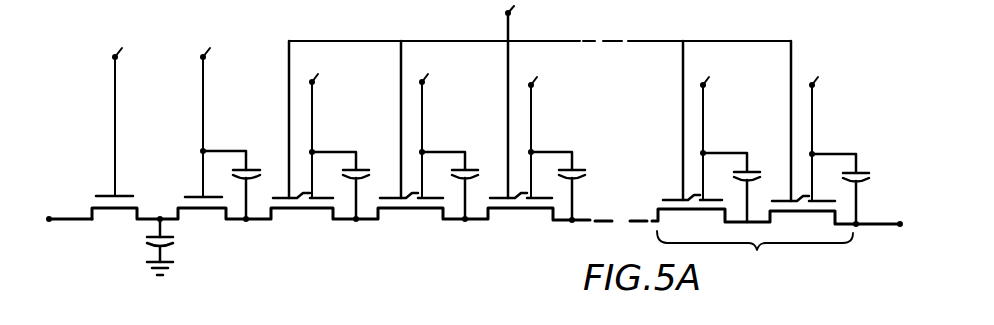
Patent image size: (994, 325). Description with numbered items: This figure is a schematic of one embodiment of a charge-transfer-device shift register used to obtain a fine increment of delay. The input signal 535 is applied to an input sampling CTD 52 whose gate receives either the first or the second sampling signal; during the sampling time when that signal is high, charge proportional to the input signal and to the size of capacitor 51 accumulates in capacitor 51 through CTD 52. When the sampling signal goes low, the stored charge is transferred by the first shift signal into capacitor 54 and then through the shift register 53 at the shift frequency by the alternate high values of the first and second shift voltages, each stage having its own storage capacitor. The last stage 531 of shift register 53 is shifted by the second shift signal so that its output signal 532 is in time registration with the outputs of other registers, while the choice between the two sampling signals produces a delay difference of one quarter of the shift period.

The capacitor 51 is at (176, 242).
The CTD 52 is at (120, 222).
The shift register 53 is at (410, 271).
The capacitor 54 is at (252, 165).
The last stage 531 is at (757, 250).
The output signal 532 is at (903, 228).
The input signal 535 is at (70, 257).